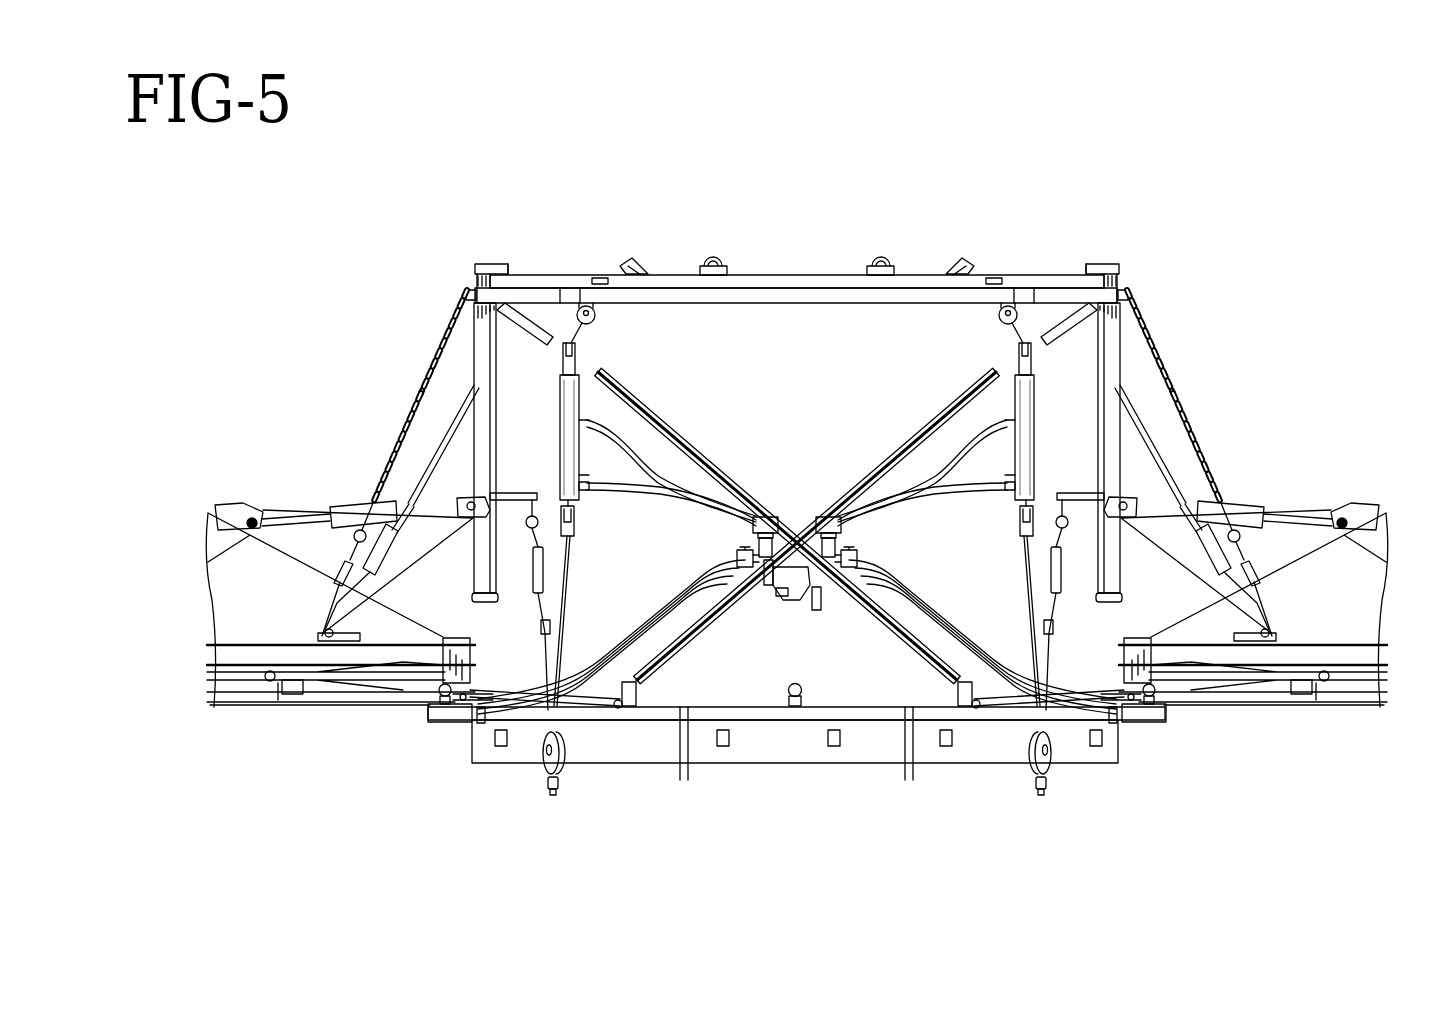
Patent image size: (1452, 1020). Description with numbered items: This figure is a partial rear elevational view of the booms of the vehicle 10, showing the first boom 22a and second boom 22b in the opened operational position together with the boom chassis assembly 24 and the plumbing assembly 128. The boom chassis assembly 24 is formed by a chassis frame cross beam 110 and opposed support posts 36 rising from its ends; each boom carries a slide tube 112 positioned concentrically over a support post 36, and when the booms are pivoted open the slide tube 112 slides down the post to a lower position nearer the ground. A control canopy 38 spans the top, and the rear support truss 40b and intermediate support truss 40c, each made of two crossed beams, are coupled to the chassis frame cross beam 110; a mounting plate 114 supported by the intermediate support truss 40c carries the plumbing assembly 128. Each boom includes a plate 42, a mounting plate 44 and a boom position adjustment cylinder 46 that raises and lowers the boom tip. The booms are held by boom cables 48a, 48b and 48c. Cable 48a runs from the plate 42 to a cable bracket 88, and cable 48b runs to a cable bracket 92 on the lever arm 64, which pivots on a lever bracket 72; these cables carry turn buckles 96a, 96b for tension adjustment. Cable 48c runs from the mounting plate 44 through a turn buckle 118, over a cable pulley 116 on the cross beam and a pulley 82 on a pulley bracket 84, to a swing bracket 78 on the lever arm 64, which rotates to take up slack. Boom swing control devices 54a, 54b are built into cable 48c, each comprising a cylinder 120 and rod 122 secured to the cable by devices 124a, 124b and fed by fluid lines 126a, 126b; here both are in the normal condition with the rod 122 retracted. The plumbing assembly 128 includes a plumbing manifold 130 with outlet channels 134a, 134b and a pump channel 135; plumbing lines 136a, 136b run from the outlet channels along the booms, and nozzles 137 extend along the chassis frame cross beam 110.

The vehicle 10 is at (1310, 296).
The first boom 22a is at (252, 465).
The second boom 22b is at (1348, 465).
The boom chassis assembly 24 is at (1133, 208).
The support post 36 is at (472, 300).
The control canopy 38 is at (810, 288).
The rear support truss 40b is at (838, 517).
The intermediate support truss 40c is at (805, 517).
The plate 42 is at (433, 590).
The mounting plate 44 is at (527, 712).
The boom position adjustment cylinder 46 is at (395, 500).
The boom cable 48a is at (415, 408).
The boom cable 48b is at (455, 328).
The boom cable 48c is at (560, 585).
The boom swing control device 54a is at (612, 415).
The boom swing control device 54b is at (988, 375).
The lever arm 64 is at (682, 274).
The lever bracket 72 is at (494, 265).
The swing bracket 78 is at (632, 260).
The pulley 82 is at (596, 318).
The pulley bracket 84 is at (602, 278).
The cable bracket 88 is at (468, 290).
The cable bracket 92 is at (711, 258).
The turn buckle 96a is at (300, 519).
The turn buckle 96b is at (378, 508).
The chassis frame cross beam 110 is at (648, 764).
The slide tube 112 is at (575, 488).
The mounting plate 114 is at (760, 590).
The cable pulley 116 is at (550, 792).
The turn buckle 118 is at (545, 772).
The cylinder 120 is at (560, 440).
The rod 122 is at (572, 516).
The device 124a is at (577, 363).
The device 124b is at (485, 724).
The fluid line 126a is at (680, 490).
The fluid line 126b is at (660, 462).
The plumbing assembly 128 is at (797, 601).
The plumbing manifold 130 is at (778, 596).
The outlet channel 134a is at (737, 540).
The outlet channel 134b is at (857, 540).
The pump channel 135 is at (821, 600).
The plumbing line 136a is at (255, 645).
The plumbing line 136b is at (1342, 645).
The nozzle 137 is at (440, 700).